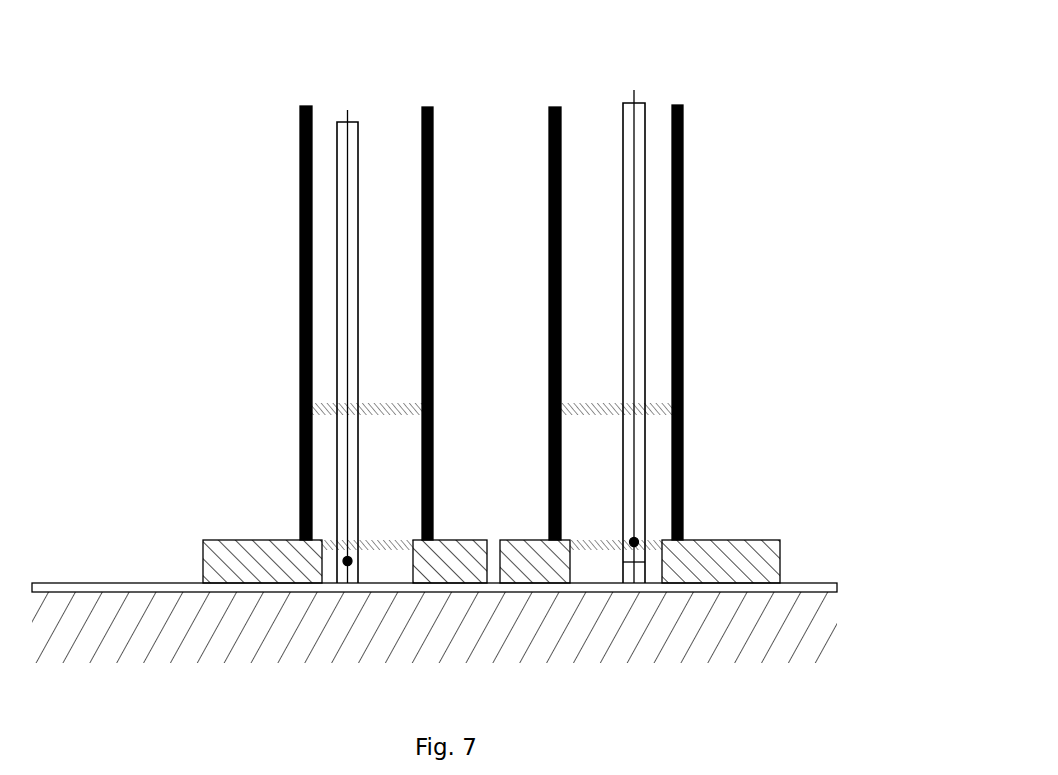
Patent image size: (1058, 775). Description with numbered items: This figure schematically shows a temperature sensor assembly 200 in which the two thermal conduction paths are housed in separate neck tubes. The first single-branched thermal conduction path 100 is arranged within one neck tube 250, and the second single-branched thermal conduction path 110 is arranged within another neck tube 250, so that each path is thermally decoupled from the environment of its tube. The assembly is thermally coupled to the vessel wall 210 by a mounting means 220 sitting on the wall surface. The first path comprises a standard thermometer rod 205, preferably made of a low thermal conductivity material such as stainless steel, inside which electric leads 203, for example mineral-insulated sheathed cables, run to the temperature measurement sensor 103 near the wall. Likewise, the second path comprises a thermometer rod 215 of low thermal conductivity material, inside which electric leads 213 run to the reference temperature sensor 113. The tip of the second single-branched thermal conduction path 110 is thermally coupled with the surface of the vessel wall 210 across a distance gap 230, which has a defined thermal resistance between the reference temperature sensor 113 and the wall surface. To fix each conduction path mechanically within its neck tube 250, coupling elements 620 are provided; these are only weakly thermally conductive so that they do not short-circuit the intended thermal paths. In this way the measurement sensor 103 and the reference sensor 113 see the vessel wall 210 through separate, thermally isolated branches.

The first single-branched thermal conduction path 100 is at (298, 88).
The second single-branched thermal conduction path 110 is at (680, 92).
The temperature sensor assembly 200 is at (778, 285).
The neck tube 250 is at (548, 170).
The standard thermometer rod 205 is at (338, 268).
The thermometer rod 215 is at (645, 282).
The coupling element 620 is at (328, 400).
The electric leads 213 is at (636, 390).
The electric leads 203 is at (338, 440).
The reference temperature sensor 113 is at (638, 524).
The temperature measurement sensor 103 is at (340, 545).
The mounting means 220 is at (778, 527).
The vessel wall 210 is at (803, 580).
The distance gap 230 is at (646, 583).